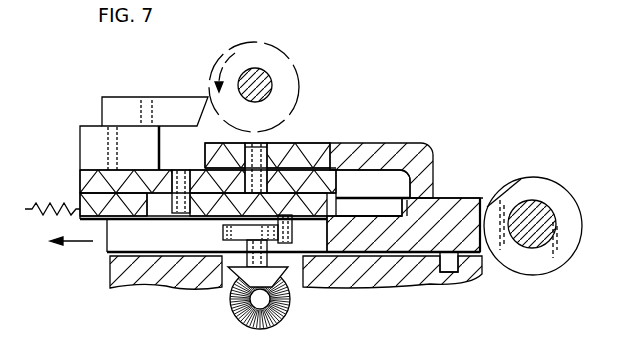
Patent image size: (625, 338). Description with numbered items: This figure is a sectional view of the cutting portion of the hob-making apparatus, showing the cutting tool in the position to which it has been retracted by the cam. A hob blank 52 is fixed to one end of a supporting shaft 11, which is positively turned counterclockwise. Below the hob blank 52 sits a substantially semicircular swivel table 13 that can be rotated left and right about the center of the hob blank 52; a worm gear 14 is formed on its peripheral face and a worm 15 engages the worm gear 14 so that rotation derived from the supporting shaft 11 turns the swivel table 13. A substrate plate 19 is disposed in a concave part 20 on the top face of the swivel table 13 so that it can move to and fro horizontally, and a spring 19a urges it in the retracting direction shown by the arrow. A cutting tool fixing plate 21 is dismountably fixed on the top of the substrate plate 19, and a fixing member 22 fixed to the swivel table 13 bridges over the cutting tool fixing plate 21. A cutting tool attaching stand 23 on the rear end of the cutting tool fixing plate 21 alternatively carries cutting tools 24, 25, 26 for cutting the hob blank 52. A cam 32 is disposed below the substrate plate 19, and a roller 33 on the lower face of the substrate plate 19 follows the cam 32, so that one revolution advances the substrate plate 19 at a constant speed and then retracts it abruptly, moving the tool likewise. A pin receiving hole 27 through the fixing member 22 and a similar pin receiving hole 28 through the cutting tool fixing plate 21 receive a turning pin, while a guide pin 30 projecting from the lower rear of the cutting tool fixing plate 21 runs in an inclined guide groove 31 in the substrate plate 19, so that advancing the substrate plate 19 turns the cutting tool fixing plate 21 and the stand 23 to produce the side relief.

The supporting shaft 11 is at (272, 88).
The swivel table 13 is at (452, 208).
The worm gear 14 is at (522, 178).
The worm 15 is at (562, 192).
The substrate plate 19 is at (80, 220).
The spring 19a is at (58, 206).
The concave part 20 is at (370, 203).
The cutting tool fixing plate 21 is at (87, 175).
The fixing member 22 is at (430, 152).
The cutting tool attaching stand 23 is at (87, 145).
The cutting tool 24 is at (142, 103).
The cutting tool 25 is at (143, 99).
The cutting tool 26 is at (142, 99).
The pin receiving hole 27 is at (267, 143).
The pin receiving hole 28 is at (293, 152).
The guide pin 30 is at (181, 172).
The inclined guide groove 31 is at (153, 208).
The cam 32 is at (223, 237).
The roller 33 is at (292, 236).
The hob blank 52 is at (288, 72).